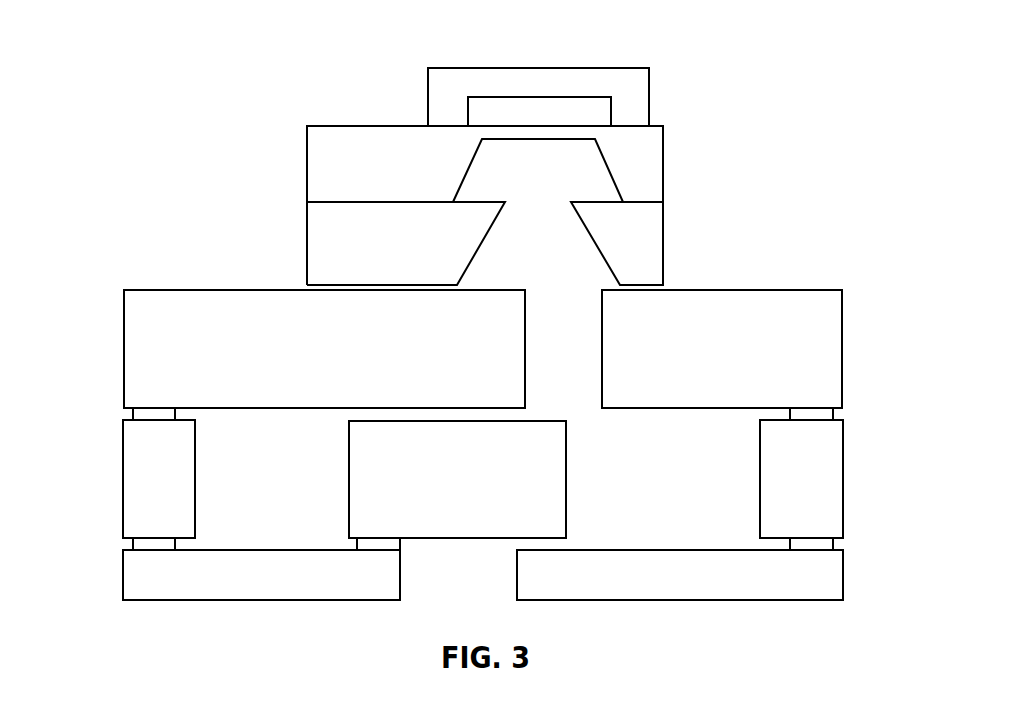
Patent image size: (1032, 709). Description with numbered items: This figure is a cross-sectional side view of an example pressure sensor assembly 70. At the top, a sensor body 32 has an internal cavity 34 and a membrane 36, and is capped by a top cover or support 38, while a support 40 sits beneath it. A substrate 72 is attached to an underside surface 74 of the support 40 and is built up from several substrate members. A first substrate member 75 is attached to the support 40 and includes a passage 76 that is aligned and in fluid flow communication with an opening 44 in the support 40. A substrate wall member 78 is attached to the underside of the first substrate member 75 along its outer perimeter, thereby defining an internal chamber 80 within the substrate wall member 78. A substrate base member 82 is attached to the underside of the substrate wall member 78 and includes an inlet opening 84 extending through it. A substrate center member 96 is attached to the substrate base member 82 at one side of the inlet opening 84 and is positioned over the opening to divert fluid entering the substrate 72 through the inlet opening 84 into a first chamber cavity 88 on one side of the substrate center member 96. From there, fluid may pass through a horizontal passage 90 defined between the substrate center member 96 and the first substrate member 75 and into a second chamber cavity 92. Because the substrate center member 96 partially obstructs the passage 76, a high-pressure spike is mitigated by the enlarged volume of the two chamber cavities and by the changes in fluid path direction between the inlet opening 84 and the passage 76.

The pressure sensor assembly 70 is at (728, 60).
The sensor body 32 is at (307, 185).
The internal cavity 34 is at (590, 181).
The membrane 36 is at (513, 142).
The top cover or support 38 is at (634, 78).
The support 40 is at (315, 243).
The opening 44 is at (557, 257).
The substrate 72 is at (118, 350).
The underside surface 74 is at (337, 287).
The first substrate member 75 is at (823, 318).
The passage 76 is at (572, 347).
The substrate wall member 78 is at (143, 483).
The internal chamber 80 is at (682, 446).
The substrate base member 82 is at (192, 582).
The inlet opening 84 is at (437, 580).
The first chamber cavity 88 is at (695, 497).
The horizontal passage 90 is at (362, 413).
The second chamber cavity 92 is at (285, 497).
The substrate center member 96 is at (365, 489).